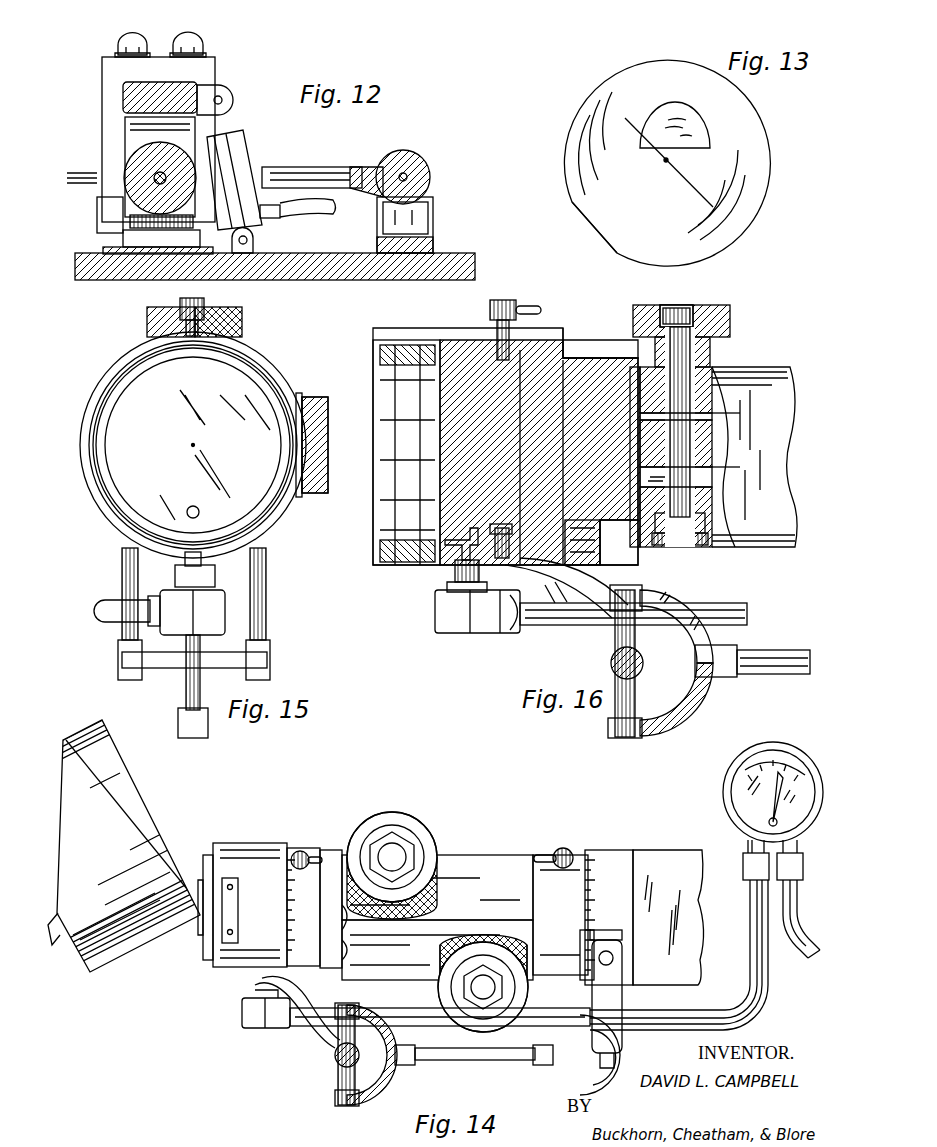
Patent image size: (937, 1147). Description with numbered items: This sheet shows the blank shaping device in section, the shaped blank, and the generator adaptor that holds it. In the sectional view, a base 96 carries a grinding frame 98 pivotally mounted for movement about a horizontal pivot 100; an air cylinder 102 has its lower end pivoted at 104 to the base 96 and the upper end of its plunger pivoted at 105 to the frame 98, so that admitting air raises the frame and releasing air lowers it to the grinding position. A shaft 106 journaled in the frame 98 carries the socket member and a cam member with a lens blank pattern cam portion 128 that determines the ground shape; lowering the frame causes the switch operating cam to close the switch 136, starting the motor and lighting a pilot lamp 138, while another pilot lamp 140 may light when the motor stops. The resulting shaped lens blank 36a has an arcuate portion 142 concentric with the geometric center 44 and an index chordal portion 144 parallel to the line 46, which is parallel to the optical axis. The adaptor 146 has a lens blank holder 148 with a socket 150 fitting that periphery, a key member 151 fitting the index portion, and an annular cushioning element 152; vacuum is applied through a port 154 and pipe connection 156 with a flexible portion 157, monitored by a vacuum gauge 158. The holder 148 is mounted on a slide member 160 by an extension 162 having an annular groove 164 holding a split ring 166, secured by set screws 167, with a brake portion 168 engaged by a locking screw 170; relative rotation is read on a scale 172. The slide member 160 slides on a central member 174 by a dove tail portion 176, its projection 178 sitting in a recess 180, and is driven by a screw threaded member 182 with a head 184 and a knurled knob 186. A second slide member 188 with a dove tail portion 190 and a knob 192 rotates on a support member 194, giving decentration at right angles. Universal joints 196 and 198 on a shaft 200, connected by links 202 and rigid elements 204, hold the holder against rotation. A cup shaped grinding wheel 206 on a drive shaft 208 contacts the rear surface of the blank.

In FIG. 13, the shaped lens blank 36a is at (755, 160).
In FIG. 14, the shaped lens blank 36a is at (208, 870).
In FIG. 13, the geometric center 44 is at (672, 160).
In FIG. 13, the line 46 is at (688, 190).
In FIG. 12, the base 96 is at (318, 262).
In FIG. 12, the grinding frame 98 is at (195, 90).
In FIG. 12, the horizontal pivot 100 is at (410, 175).
In FIG. 12, the air cylinder 102 is at (245, 150).
In FIG. 12, the lower end pivot of air cylinder 104 is at (248, 240).
In FIG. 12, the plunger pivot 105 is at (224, 100).
In FIG. 12, the shaft 106 is at (140, 165).
In FIG. 12, the lens blank pattern cam portion 128 is at (97, 204).
In FIG. 14, the switch 136 is at (202, 930).
In FIG. 12, the pilot lamp 138 is at (128, 38).
In FIG. 12, the pilot lamp 140 is at (188, 38).
In FIG. 13, the arcuate portion 142 is at (662, 60).
In FIG. 13, the index chordal portion 144 is at (594, 235).
In FIG. 15, the adaptor 146 is at (287, 538).
In FIG. 16, the adaptor 146 is at (377, 580).
In FIG. 14, the adaptor 146 is at (484, 828).
In FIG. 15, the lens blank holder 148 is at (276, 370).
In FIG. 16, the lens blank holder 148 is at (440, 332).
In FIG. 14, the lens blank holder 148 is at (265, 860).
In FIG. 15, the socket 150 is at (110, 385).
In FIG. 16, the socket 150 is at (395, 485).
In FIG. 15, the key member 151 is at (299, 398).
In FIG. 14, the key member 151 is at (226, 900).
In FIG. 15, the annular cushioning element 152 is at (105, 420).
In FIG. 16, the annular cushioning element 152 is at (385, 505).
In FIG. 15, the port 154 is at (200, 512).
In FIG. 16, the port 154 is at (455, 543).
In FIG. 15, the pipe connection 156 is at (120, 608).
In FIG. 16, the pipe connection 156 is at (535, 626).
In FIG. 14, the pipe connection 156 is at (433, 1014).
In FIG. 14, the flexible portion 157 is at (748, 1005).
In FIG. 14, the vacuum gauge 158 is at (785, 740).
In FIG. 16, the slide member 160 is at (600, 365).
In FIG. 14, the slide member 160 is at (305, 860).
In FIG. 16, the extension 162 is at (558, 353).
In FIG. 16, the annular groove 164 is at (488, 350).
In FIG. 16, the split ring 166 is at (540, 530).
In FIG. 16, the set screws 167 is at (500, 560).
In FIG. 16, the brake portion 168 is at (514, 375).
In FIG. 15, the locking screw 170 is at (200, 306).
In FIG. 16, the locking screw 170 is at (528, 306).
In FIG. 14, the locking screw 170 is at (312, 858).
In FIG. 14, the scale 172 is at (282, 912).
In FIG. 16, the central member 174 is at (728, 378).
In FIG. 14, the central member 174 is at (448, 865).
In FIG. 16, the dove tail portion 176 is at (622, 520).
In FIG. 14, the dove tail portion 176 is at (360, 910).
In FIG. 16, the axially extending projection 178 is at (702, 435).
In FIG. 16, the axial recess 180 is at (700, 485).
In FIG. 16, the screw threaded member 182 is at (700, 485).
In FIG. 14, the screw threaded member 182 is at (398, 850).
In FIG. 16, the head 184 is at (690, 545).
In FIG. 15, the knurled knob 186 is at (235, 325).
In FIG. 16, the knurled knob 186 is at (707, 318).
In FIG. 14, the knurled knob 186 is at (392, 830).
In FIG. 14, the slide member 188 is at (540, 880).
In FIG. 14, the dove tail portion 190 is at (560, 940).
In FIG. 15, the knob 192 is at (315, 490).
In FIG. 14, the knob 192 is at (490, 1005).
In FIG. 14, the support member 194 is at (625, 858).
In FIG. 14, the universal joint 196 is at (610, 1066).
In FIG. 15, the universal joint 198 is at (173, 688).
In FIG. 16, the universal joint 198 is at (657, 648).
In FIG. 14, the universal joint 198 is at (325, 1072).
In FIG. 14, the shaft 200 is at (470, 1060).
In FIG. 14, the links 202 is at (622, 1038).
In FIG. 15, the rigid elements 204 is at (124, 635).
In FIG. 14, the rigid elements 204 is at (318, 1028).
In FIG. 14, the cup shaped grinding wheel 206 is at (120, 945).
In FIG. 14, the drive shaft 208 is at (52, 940).